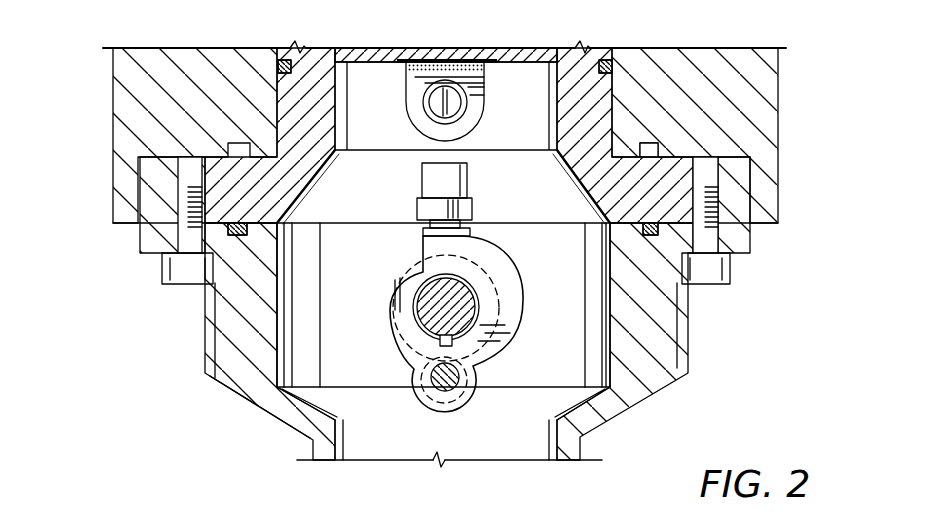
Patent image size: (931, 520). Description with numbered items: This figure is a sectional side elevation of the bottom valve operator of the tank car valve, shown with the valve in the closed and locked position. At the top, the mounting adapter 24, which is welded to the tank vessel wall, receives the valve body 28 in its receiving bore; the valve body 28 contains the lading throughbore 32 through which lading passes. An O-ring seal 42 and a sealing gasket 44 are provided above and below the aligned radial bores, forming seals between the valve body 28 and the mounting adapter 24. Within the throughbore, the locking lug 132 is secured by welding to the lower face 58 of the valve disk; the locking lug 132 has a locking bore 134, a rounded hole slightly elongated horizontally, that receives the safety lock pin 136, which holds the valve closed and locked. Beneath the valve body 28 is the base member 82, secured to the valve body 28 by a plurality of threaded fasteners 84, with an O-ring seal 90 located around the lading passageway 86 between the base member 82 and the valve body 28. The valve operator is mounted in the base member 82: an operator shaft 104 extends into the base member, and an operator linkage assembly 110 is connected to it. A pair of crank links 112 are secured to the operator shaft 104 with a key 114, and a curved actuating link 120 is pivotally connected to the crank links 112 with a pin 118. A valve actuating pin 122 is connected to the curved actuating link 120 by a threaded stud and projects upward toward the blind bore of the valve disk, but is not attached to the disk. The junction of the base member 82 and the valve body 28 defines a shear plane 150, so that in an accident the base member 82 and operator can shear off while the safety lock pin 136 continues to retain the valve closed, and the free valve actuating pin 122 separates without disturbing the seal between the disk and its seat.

The mounting adapter 24 is at (123, 102).
The valve body 28 is at (610, 95).
The lading throughbore 32 is at (508, 95).
The O-ring seal 42 is at (277, 63).
The sealing gasket 44 is at (650, 142).
The lower face 58 is at (383, 58).
The base member 82 is at (228, 345).
The threaded fasteners 84 is at (163, 277).
The lading passageway 86 is at (610, 352).
The O-ring seal 90 is at (232, 228).
The operator shaft 104 is at (422, 300).
The operator linkage assembly 110 is at (414, 244).
The crank links 112 is at (410, 353).
The key 114 is at (440, 337).
The pin 118 is at (460, 371).
The curved actuating link 120 is at (498, 263).
The valve actuating pin 122 is at (467, 185).
The locking lug 132 is at (478, 118).
The locking bore 134 is at (430, 115).
The safety lock pin 136 is at (452, 93).
The shear plane 150 is at (786, 218).